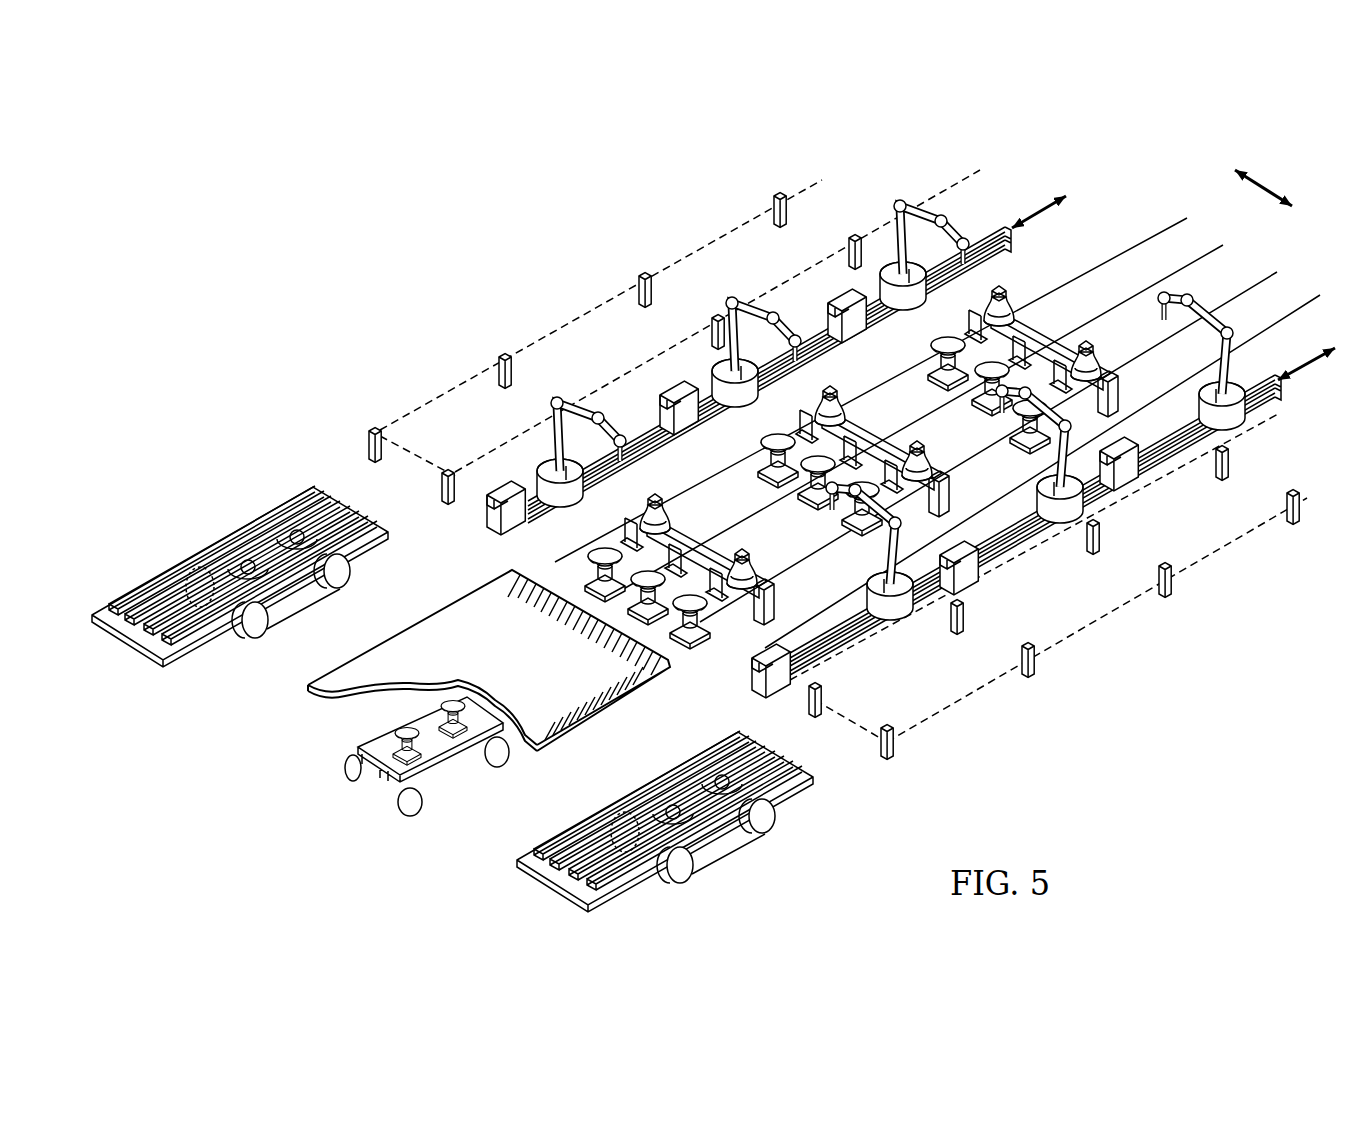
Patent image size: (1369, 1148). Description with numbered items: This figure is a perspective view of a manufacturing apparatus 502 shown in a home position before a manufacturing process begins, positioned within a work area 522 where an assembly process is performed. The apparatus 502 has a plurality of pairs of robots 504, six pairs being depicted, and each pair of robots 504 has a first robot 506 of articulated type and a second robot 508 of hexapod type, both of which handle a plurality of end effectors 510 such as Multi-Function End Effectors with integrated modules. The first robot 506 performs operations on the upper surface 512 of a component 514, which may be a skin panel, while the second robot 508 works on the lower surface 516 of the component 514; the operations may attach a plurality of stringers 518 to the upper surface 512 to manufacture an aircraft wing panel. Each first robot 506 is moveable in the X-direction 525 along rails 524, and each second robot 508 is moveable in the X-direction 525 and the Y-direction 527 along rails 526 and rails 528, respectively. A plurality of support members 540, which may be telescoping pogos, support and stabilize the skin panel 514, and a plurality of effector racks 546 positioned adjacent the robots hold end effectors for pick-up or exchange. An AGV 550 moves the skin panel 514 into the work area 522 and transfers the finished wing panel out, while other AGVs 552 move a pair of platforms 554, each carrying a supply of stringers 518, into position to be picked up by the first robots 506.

The manufacturing apparatus 502 is at (398, 275).
The pair of robots 504 is at (880, 219).
The first robot 506 is at (898, 208).
The second robot 508 is at (878, 455).
The end effectors 510 is at (1010, 290).
The upper surface 512 is at (432, 605).
The component 514 is at (489, 657).
The lower surface 516 is at (605, 700).
The stringers 518 is at (452, 699).
The work area 522 is at (580, 272).
The rails 524 is at (535, 495).
The X-direction 525 is at (1025, 212).
The rails 526 is at (1168, 228).
The Y-direction 527 is at (1290, 190).
The rails 528 is at (1048, 340).
The support members 540 is at (940, 362).
The effector racks 546 is at (842, 300).
The AGV 550 is at (452, 782).
The AGVs 552 is at (295, 600).
The platforms 554 is at (439, 699).